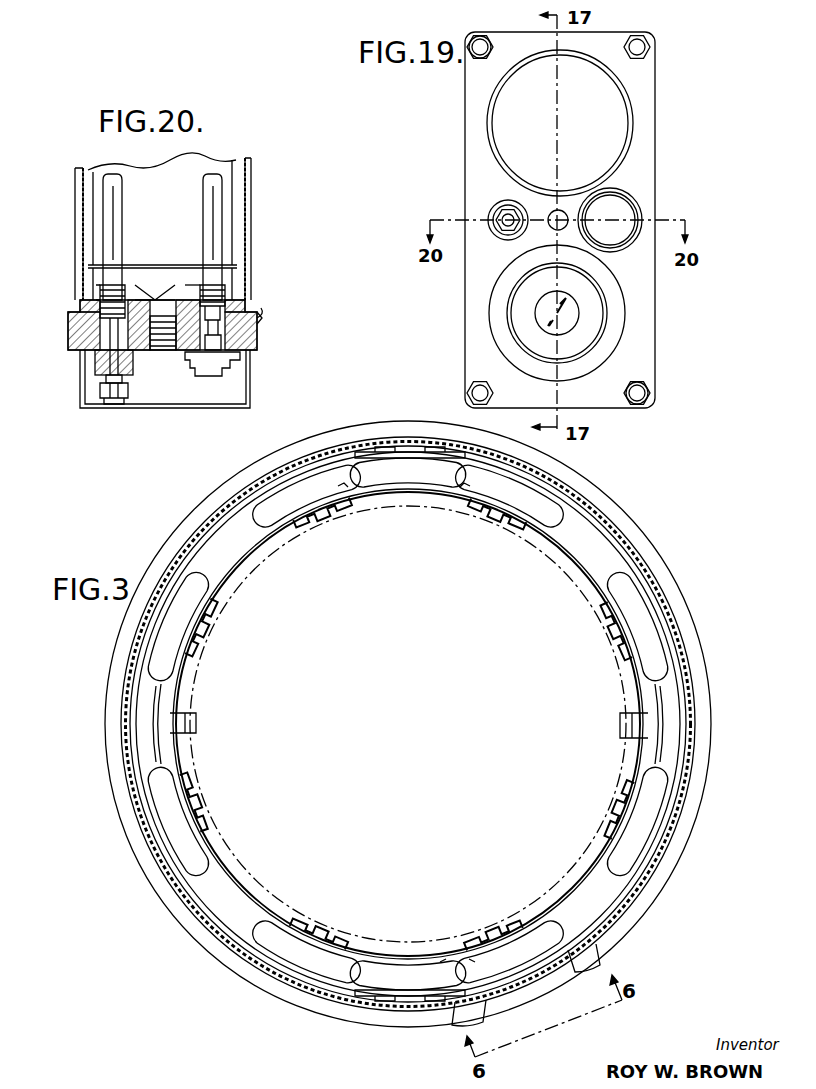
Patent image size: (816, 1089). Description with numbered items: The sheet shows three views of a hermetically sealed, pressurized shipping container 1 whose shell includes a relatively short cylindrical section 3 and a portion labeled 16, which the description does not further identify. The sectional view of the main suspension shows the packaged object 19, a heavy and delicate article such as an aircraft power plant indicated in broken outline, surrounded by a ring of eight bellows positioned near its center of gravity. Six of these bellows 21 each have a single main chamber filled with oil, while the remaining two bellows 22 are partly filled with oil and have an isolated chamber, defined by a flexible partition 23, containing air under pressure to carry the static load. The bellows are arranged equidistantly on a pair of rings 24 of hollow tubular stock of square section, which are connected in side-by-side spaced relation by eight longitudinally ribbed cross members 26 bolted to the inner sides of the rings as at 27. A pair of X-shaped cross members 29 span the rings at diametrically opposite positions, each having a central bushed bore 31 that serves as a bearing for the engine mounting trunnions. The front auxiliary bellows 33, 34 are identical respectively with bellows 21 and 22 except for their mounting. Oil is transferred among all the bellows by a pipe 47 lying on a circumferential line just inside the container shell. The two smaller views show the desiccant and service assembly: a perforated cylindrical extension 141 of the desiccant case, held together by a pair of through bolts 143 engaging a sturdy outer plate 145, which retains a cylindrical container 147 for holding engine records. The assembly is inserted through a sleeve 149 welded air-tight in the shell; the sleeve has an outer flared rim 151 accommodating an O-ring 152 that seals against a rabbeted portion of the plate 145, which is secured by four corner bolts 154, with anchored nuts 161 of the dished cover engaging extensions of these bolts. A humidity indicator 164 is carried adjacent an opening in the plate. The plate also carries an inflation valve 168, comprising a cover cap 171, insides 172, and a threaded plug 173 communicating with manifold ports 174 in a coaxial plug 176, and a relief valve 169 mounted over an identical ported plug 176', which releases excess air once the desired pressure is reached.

In FIG. 3, the container 1 is at (116, 826).
In FIG. 3, the cylindrical section 3 is at (272, 975).
In FIG. 3, the outer ring 16 is at (186, 905).
In FIG. 3, the packaged object 19 is at (266, 548).
In FIG. 3, the bellows 21 is at (205, 586).
In FIG. 3, the bellows 22 is at (276, 506).
In FIG. 3, the flexible partition 23 is at (346, 492).
In FIG. 3, the rings 24 is at (598, 880).
In FIG. 3, the cross members 26 is at (328, 512).
In FIG. 3, the bolted connection 27 is at (346, 920).
In FIG. 3, the X-shaped cross members 29 is at (180, 690).
In FIG. 3, the central bushed bore 31 is at (192, 714).
In FIG. 3, the bellows 33 is at (414, 472).
In FIG. 3, the bellows 34 is at (408, 976).
In FIG. 3, the pipe 47 is at (136, 712).
In FIG. 20, the cylindrical extension 141 is at (250, 252).
In FIG. 20, the through bolts 143 is at (204, 210).
In FIG. 19, the outer plate 145 is at (652, 326).
In FIG. 20, the outer plate 145 is at (72, 336).
In FIG. 19, the cylindrical container 147 is at (632, 136).
In FIG. 20, the sleeve 149 is at (254, 276).
In FIG. 20, the outer flared rim 151 is at (258, 312).
In FIG. 20, the O-ring 152 is at (260, 320).
In FIG. 19, the corner bolts 154 is at (475, 55).
In FIG. 19, the anchored nuts 161 is at (510, 28).
In FIG. 19, the humidity indicator 164 is at (520, 310).
In FIG. 19, the inflation valve 168 is at (494, 212).
In FIG. 20, the inflation valve 168 is at (132, 380).
In FIG. 19, the relief valve 169 is at (625, 214).
In FIG. 20, the relief valve 169 is at (232, 384).
In FIG. 20, the cover cap 171 is at (100, 392).
In FIG. 20, the insides 172 is at (106, 378).
In FIG. 20, the threaded plug 173 is at (134, 360).
In FIG. 20, the manifold ports 174 is at (142, 284).
In FIG. 20, the plug 176 is at (71, 293).
In FIG. 20, the ported plug 176' is at (185, 265).